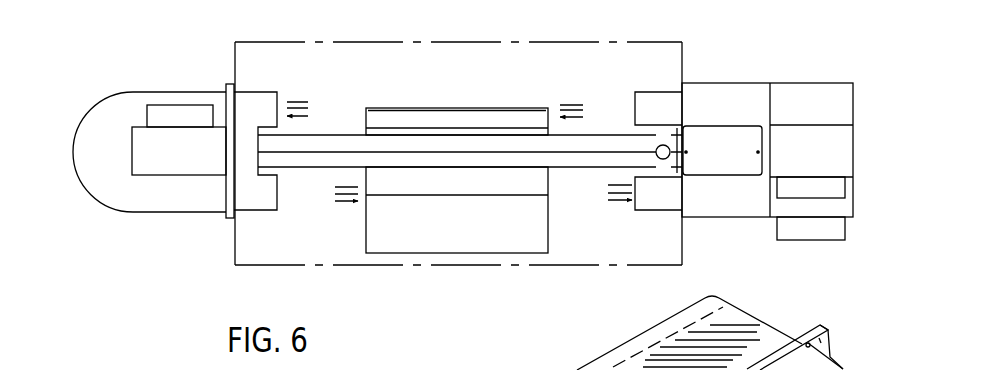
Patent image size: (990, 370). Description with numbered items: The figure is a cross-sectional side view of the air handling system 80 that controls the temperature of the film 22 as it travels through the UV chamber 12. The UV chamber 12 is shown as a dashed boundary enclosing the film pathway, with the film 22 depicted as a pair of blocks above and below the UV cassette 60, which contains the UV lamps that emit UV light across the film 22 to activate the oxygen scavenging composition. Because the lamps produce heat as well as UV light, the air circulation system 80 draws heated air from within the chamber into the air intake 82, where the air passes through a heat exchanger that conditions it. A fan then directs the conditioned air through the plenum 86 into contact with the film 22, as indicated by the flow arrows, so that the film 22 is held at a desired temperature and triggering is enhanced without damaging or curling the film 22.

The UV chamber 12 is at (658, 42).
The film 22 is at (430, 107).
The UV cassette 60 is at (640, 142).
The air handling system 80 is at (145, 71).
The air intake 82 is at (315, 87).
The plenum 86 is at (620, 91).